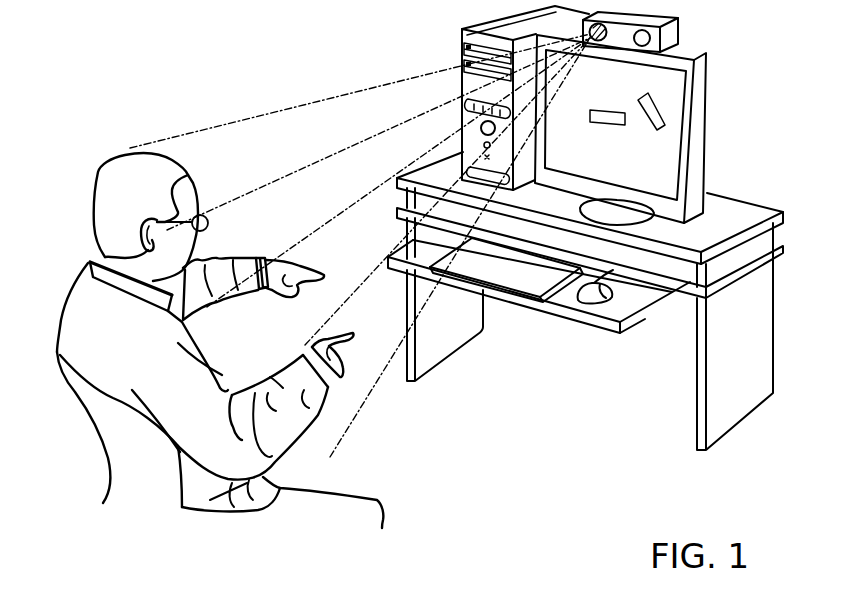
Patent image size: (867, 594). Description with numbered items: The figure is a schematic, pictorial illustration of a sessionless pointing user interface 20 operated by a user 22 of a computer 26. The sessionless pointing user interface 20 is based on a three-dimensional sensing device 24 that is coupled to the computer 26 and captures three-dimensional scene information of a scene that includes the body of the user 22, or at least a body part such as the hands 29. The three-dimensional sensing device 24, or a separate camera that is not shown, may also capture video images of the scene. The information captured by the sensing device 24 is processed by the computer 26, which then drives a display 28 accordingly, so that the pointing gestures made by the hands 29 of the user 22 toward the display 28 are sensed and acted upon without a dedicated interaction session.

The sessionless pointing user interface 20 is at (118, 54).
The user 22 is at (97, 184).
The 3D sensing device 24 is at (683, 30).
The computer 26 is at (462, 40).
The display 28 is at (718, 103).
The hands 29 is at (280, 296).